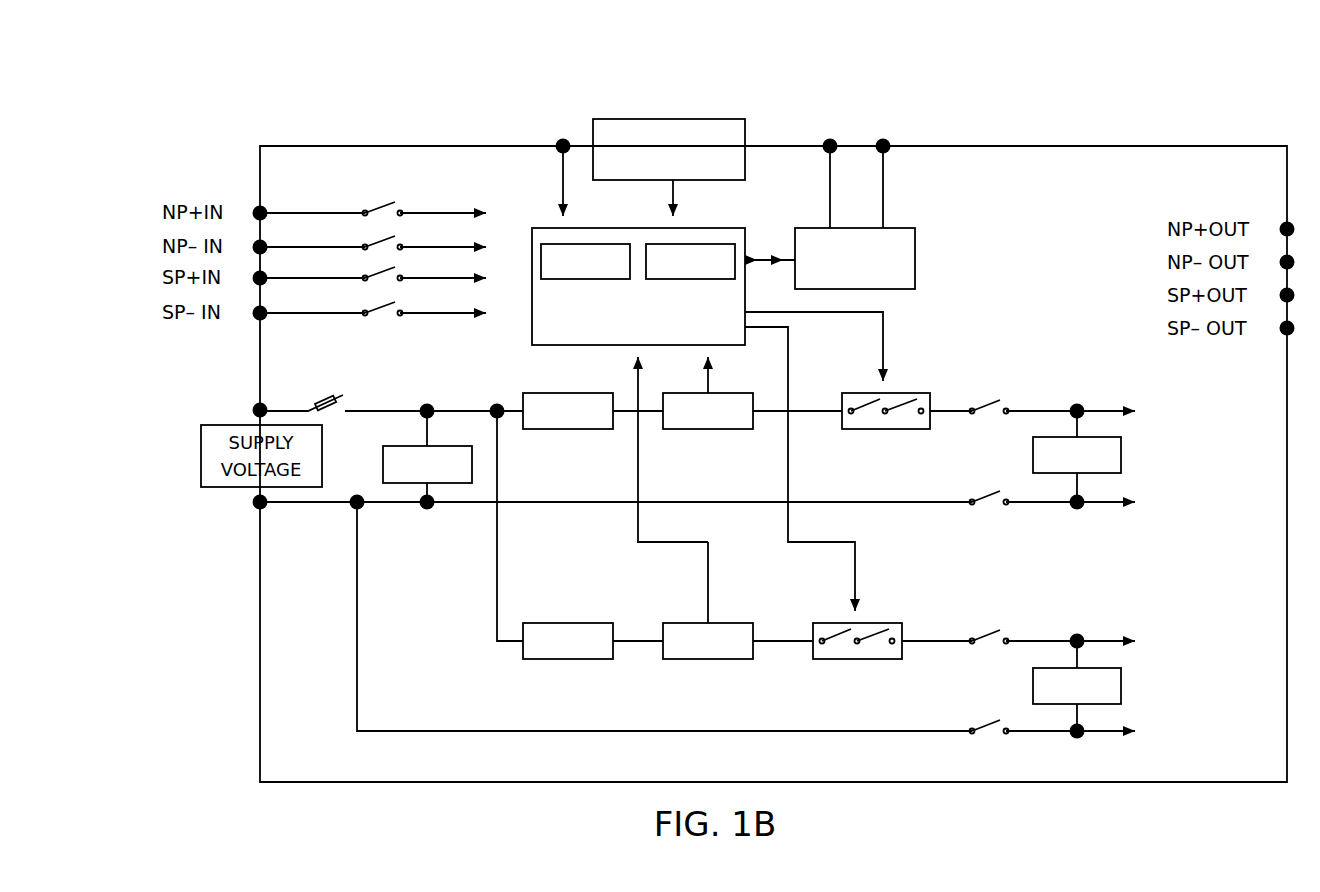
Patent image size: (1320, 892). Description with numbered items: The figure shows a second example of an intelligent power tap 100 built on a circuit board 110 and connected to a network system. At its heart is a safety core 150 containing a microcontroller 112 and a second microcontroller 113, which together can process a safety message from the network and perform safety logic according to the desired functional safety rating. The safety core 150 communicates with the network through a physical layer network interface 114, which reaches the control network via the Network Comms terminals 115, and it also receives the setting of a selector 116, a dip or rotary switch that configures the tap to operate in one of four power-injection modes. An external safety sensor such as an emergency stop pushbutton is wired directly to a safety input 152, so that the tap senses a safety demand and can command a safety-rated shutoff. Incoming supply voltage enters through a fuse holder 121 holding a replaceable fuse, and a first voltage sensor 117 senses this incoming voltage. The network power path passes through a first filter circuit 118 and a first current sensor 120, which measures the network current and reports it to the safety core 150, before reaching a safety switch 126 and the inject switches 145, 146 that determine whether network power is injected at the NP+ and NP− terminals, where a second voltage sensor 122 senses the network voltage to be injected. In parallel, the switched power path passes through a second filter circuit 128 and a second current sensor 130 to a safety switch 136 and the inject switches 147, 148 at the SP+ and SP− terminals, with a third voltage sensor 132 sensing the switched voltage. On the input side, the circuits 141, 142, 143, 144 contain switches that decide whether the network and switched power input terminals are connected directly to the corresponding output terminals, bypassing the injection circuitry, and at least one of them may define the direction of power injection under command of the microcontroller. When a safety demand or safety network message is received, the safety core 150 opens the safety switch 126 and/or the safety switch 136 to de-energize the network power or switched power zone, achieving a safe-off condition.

The intelligent power tap 100 is at (216, 89).
The circuit board 110 is at (258, 165).
The microcontroller 112 is at (608, 242).
The second microcontroller 113 is at (713, 242).
The physical layer network interface 114 is at (838, 269).
The Network Comms terminals 115 is at (855, 141).
The selector 116 is at (652, 161).
The first voltage sensor 117 is at (410, 475).
The first filter circuit 118 is at (551, 422).
The first current sensor 120 is at (691, 422).
The fuse holder 121 is at (320, 396).
The second voltage sensor 122 is at (1060, 466).
The safety switch 126 is at (906, 393).
The second filter circuit 128 is at (551, 652).
The second current sensor 130 is at (691, 652).
The third voltage sensor 132 is at (1060, 697).
The safety switch 136 is at (880, 623).
The circuit 141 is at (374, 209).
The circuit 142 is at (374, 242).
The circuit 143 is at (374, 273).
The circuit 144 is at (374, 308).
The inject switch 145 is at (990, 405).
The inject switch 146 is at (985, 498).
The inject switch 147 is at (987, 638).
The inject switch 148 is at (987, 728).
The safety core 150 is at (620, 335).
The safety input 152 is at (563, 135).